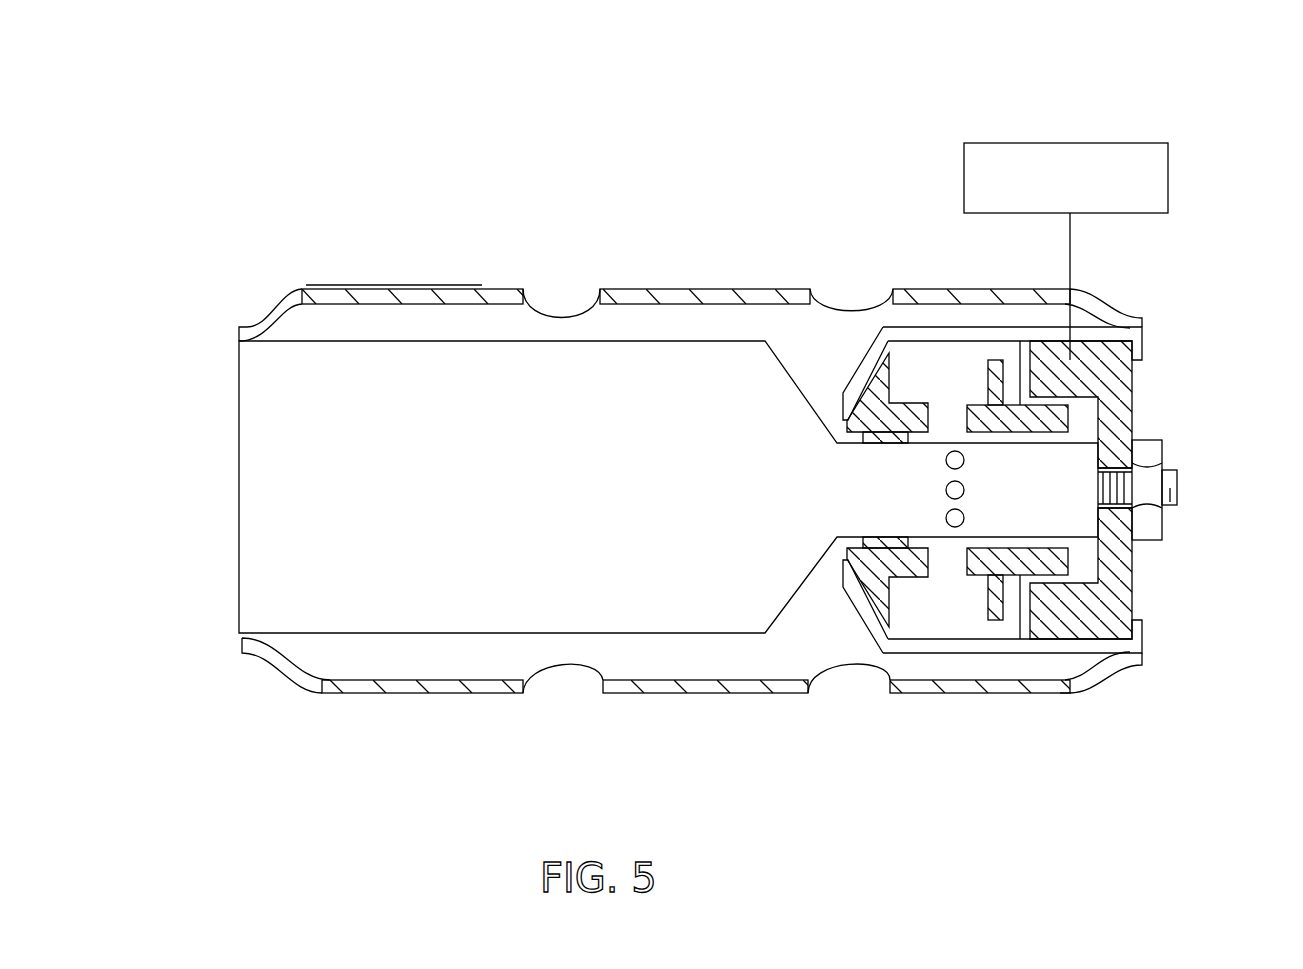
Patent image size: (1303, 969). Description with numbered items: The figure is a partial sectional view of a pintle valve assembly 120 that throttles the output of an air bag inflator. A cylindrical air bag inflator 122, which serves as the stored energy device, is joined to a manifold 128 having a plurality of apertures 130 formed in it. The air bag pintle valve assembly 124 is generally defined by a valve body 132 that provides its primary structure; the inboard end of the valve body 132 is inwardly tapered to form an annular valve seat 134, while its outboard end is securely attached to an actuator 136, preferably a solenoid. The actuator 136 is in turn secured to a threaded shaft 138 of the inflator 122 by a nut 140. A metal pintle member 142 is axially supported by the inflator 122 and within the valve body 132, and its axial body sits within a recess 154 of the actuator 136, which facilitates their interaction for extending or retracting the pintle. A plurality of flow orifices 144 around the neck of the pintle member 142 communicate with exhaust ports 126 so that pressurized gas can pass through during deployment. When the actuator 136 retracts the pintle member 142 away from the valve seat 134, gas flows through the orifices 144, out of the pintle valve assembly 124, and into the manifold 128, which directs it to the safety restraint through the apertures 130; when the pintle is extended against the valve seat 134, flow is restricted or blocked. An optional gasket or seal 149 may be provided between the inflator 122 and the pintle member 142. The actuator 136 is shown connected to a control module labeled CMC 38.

The CMC controller 38 is at (1087, 142).
The pintle valve assembly 120 is at (610, 130).
The air bag inflator 122 is at (258, 492).
The air bag pintle valve assembly 124 is at (1052, 665).
The exhaust ports 126 is at (943, 518).
The manifold 128 is at (713, 693).
The apertures 130 is at (563, 315).
The valve body 132 is at (990, 335).
The annular valve seat 134 is at (862, 372).
The actuator 136 is at (1118, 401).
The threaded shaft 138 is at (1177, 488).
The nut 140 is at (1148, 453).
The pintle member 142 is at (880, 570).
The flow orifices 144 is at (938, 595).
The gasket or seal 149 is at (867, 443).
The recess 154 is at (1097, 560).